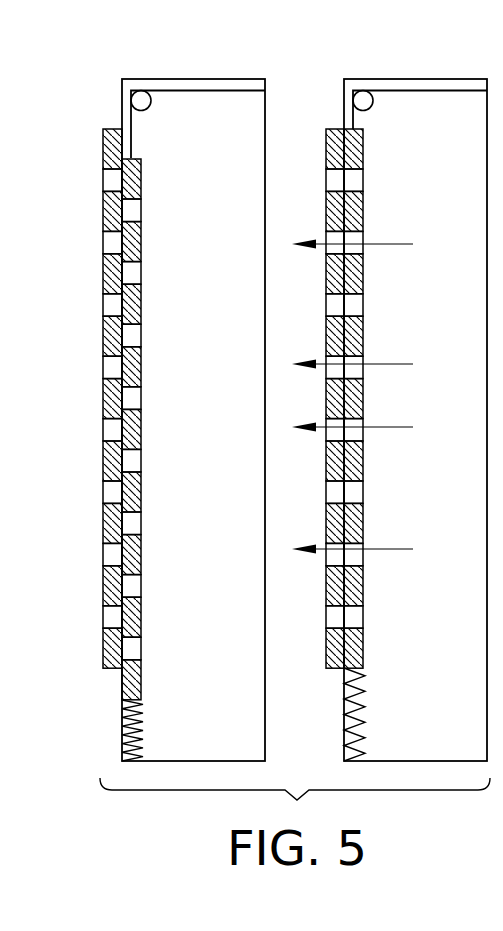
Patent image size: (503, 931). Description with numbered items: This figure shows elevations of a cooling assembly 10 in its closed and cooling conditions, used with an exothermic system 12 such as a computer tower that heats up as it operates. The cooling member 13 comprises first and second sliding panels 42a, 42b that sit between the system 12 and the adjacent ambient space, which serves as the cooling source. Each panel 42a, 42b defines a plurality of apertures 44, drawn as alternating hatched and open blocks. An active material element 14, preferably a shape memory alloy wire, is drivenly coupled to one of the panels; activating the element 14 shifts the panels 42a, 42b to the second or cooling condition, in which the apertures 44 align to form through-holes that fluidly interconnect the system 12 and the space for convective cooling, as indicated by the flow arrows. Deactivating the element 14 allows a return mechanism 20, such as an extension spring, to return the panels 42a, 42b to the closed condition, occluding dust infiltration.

The cooling assembly 10 is at (62, 107).
The exothermic system 12 is at (213, 415).
The cooling member 13 is at (322, 120).
The active material element 14 is at (215, 90).
The return mechanism 20 is at (122, 735).
The first sliding panel 42a is at (103, 587).
The second sliding panel 42b is at (122, 688).
The apertures 44 is at (104, 490).